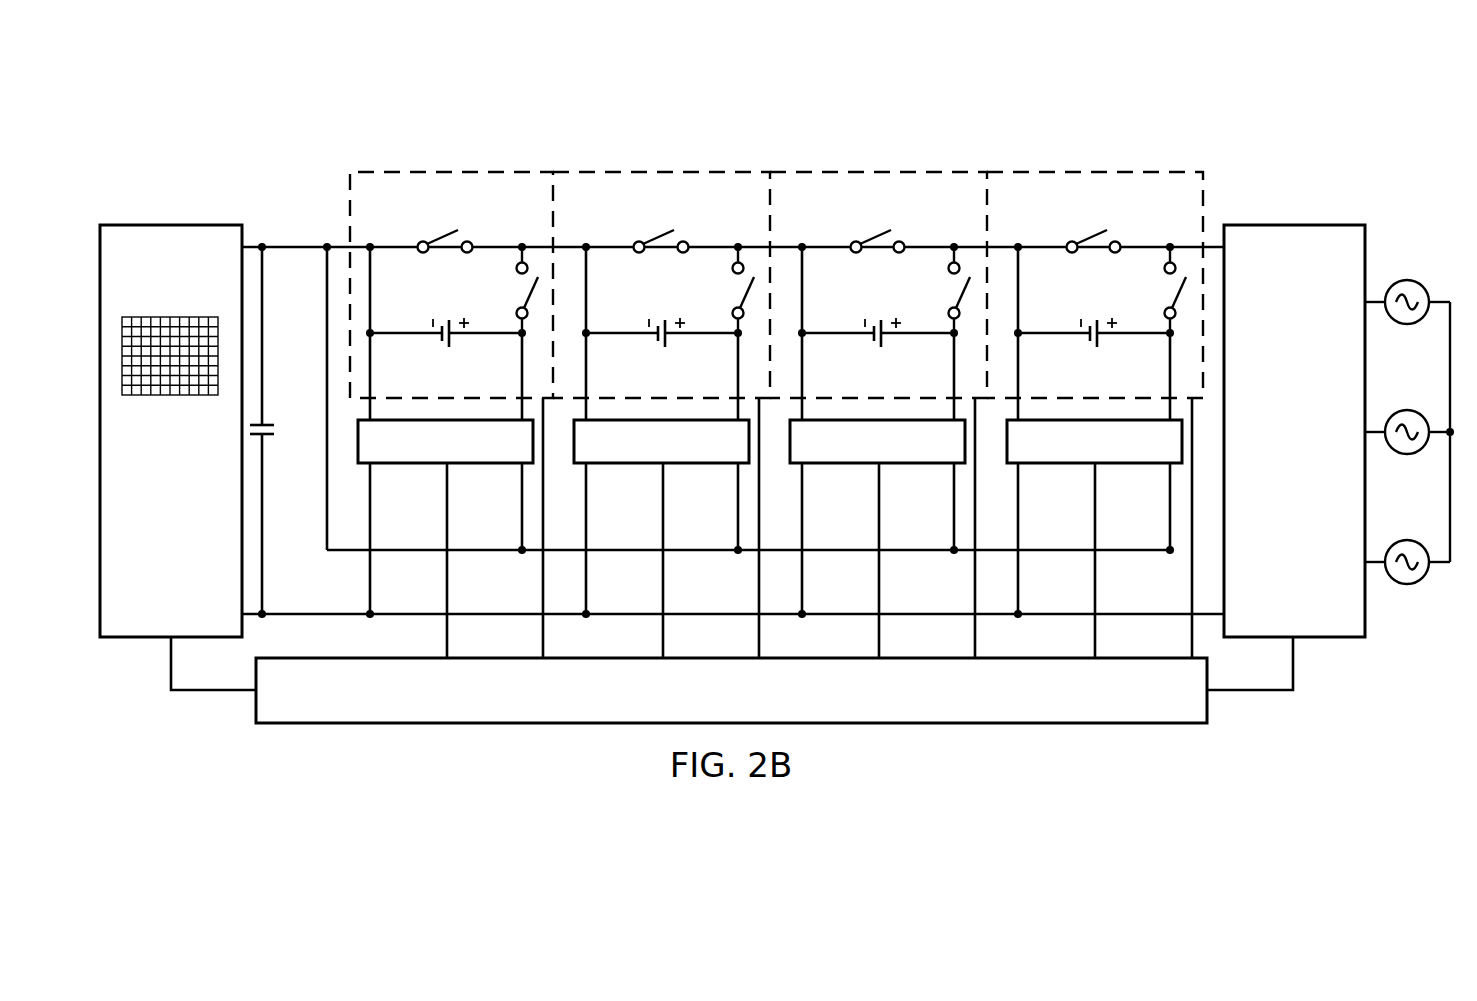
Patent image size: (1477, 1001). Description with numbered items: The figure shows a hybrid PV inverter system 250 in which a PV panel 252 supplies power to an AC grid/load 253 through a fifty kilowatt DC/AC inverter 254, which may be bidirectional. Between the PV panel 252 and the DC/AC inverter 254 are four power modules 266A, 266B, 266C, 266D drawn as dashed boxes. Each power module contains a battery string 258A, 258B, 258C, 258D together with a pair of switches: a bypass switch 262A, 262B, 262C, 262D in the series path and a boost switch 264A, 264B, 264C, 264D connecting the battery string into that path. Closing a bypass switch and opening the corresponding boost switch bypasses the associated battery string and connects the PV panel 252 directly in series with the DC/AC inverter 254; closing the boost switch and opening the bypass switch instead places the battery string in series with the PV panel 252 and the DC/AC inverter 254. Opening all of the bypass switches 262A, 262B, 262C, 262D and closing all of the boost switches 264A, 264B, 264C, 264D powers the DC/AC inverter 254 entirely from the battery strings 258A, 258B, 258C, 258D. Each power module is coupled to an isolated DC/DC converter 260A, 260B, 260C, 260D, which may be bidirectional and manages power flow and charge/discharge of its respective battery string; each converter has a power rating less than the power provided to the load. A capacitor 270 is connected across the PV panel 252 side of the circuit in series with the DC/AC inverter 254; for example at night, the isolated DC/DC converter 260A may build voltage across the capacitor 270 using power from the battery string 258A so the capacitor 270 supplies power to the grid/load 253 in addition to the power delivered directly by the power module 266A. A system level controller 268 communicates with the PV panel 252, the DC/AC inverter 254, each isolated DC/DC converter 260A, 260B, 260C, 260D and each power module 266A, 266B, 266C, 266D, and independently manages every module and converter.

The hybrid PV inverter system 250 is at (1010, 88).
The PV panel 252 is at (150, 486).
The AC grid/load 253 is at (1432, 243).
The DC/AC inverter 254 is at (1272, 486).
The battery string 258A is at (425, 338).
The battery string 258B is at (641, 338).
The battery string 258C is at (900, 338).
The battery string 258D is at (1116, 338).
The isolated DC/DC converter 260A is at (425, 465).
The isolated DC/DC converter 260B is at (642, 465).
The isolated DC/DC converter 260C is at (900, 465).
The isolated DC/DC converter 260D is at (1117, 465).
The bypass switch 262A is at (446, 232).
The bypass switch 262B is at (664, 232).
The bypass switch 262C is at (881, 232).
The bypass switch 262D is at (1094, 232).
The boost switch 264A is at (528, 290).
The boost switch 264B is at (746, 290).
The boost switch 264C is at (962, 290).
The boost switch 264D is at (1178, 290).
The power module 266A is at (435, 180).
The power module 266B is at (662, 180).
The power module 266C is at (912, 180).
The power module 266D is at (1137, 180).
The system level controller 268 is at (852, 706).
The capacitor 270 is at (277, 430).